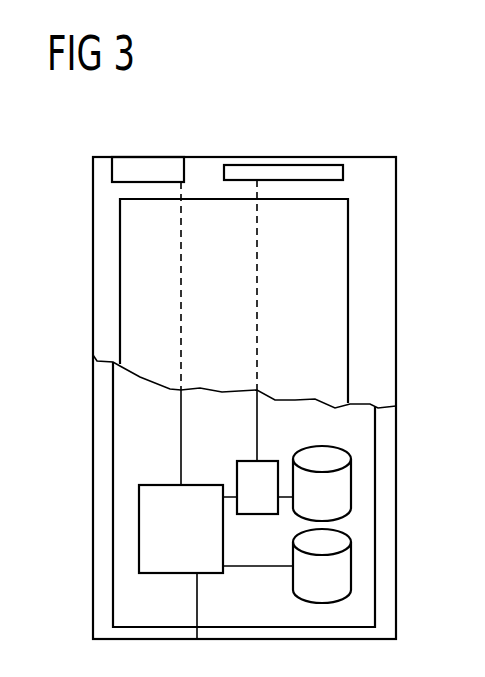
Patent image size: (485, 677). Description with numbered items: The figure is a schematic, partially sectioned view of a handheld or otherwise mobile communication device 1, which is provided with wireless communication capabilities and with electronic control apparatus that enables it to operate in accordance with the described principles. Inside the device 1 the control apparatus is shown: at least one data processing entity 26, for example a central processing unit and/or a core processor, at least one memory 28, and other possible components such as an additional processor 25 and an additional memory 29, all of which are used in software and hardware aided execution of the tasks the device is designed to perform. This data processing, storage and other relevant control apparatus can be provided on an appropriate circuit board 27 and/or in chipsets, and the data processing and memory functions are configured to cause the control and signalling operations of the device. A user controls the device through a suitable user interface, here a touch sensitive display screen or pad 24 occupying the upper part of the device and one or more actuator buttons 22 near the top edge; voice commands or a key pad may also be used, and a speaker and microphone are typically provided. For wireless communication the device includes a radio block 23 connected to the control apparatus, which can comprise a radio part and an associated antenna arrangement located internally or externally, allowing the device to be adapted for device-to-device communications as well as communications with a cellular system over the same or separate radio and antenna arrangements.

The mobile communication device 1 is at (100, 222).
The actuator button 22 is at (154, 165).
The radio block 23 is at (282, 170).
The touch sensitive display screen or pad 24 is at (152, 300).
The additional processor 25 is at (245, 460).
The data processing entity 26 is at (140, 530).
The circuit board 27 is at (123, 600).
The memory 28 is at (351, 485).
The additional memory 29 is at (350, 565).